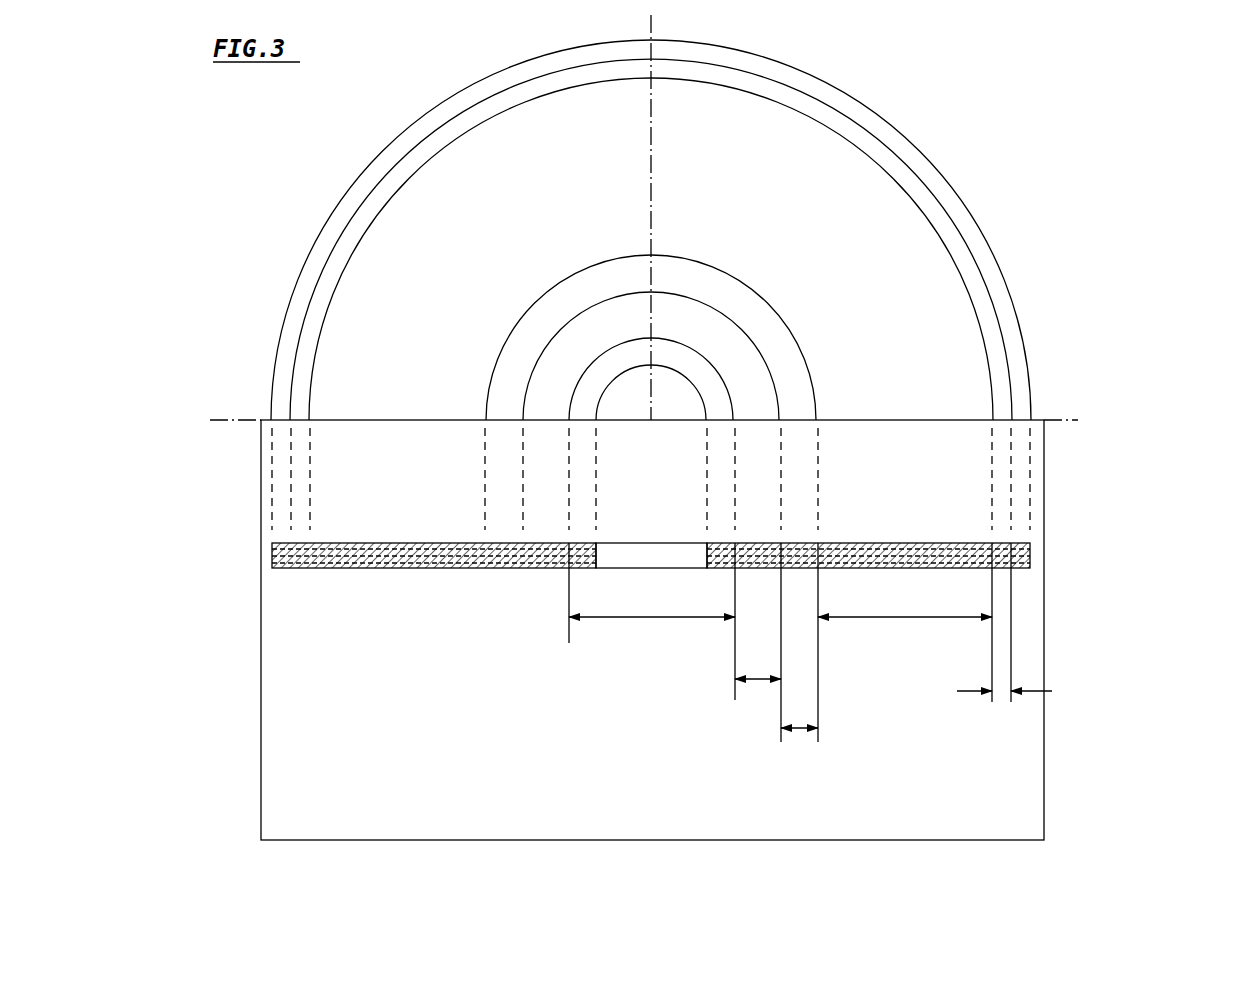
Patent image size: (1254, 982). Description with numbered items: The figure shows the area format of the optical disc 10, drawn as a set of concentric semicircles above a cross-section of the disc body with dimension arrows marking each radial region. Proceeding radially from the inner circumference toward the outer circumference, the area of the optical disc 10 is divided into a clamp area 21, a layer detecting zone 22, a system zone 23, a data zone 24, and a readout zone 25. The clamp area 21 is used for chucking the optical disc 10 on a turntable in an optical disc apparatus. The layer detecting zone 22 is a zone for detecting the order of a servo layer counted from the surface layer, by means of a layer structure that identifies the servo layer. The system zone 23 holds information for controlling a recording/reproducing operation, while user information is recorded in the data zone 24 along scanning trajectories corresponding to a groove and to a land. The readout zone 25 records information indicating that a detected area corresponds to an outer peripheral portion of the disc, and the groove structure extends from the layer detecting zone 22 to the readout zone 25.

The optical disc 10 is at (922, 117).
The clamp area 21 is at (652, 621).
The layer detecting zone 22 is at (758, 690).
The system zone 23 is at (800, 743).
The data zone 24 is at (905, 622).
The readout zone 25 is at (1005, 703).